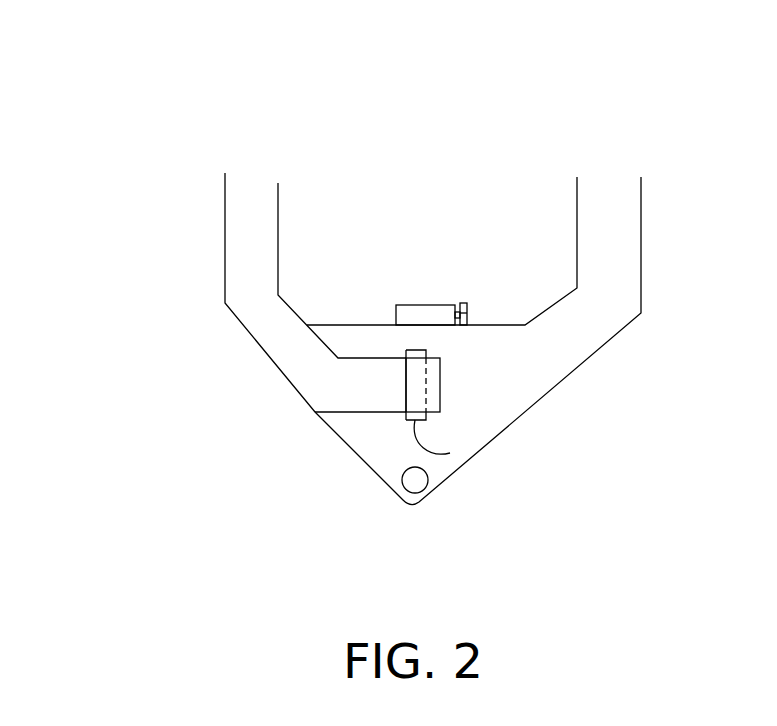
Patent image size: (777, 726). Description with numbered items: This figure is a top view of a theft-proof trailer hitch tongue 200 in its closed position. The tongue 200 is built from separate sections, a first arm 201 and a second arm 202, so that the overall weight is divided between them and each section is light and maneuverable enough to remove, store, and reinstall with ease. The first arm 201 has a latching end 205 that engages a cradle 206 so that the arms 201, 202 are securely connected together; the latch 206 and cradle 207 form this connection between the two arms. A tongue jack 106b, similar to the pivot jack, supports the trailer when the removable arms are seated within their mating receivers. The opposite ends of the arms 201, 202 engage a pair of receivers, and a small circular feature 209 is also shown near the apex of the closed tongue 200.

The tongue 200 is at (388, 269).
The first arm 201 is at (279, 225).
The second arm 202 is at (641, 223).
The tongue jack 106b is at (423, 305).
The latching end 205 is at (440, 377).
The cradle 206 is at (417, 356).
The cradle 207 is at (450, 453).
The drain hole 209 is at (415, 480).